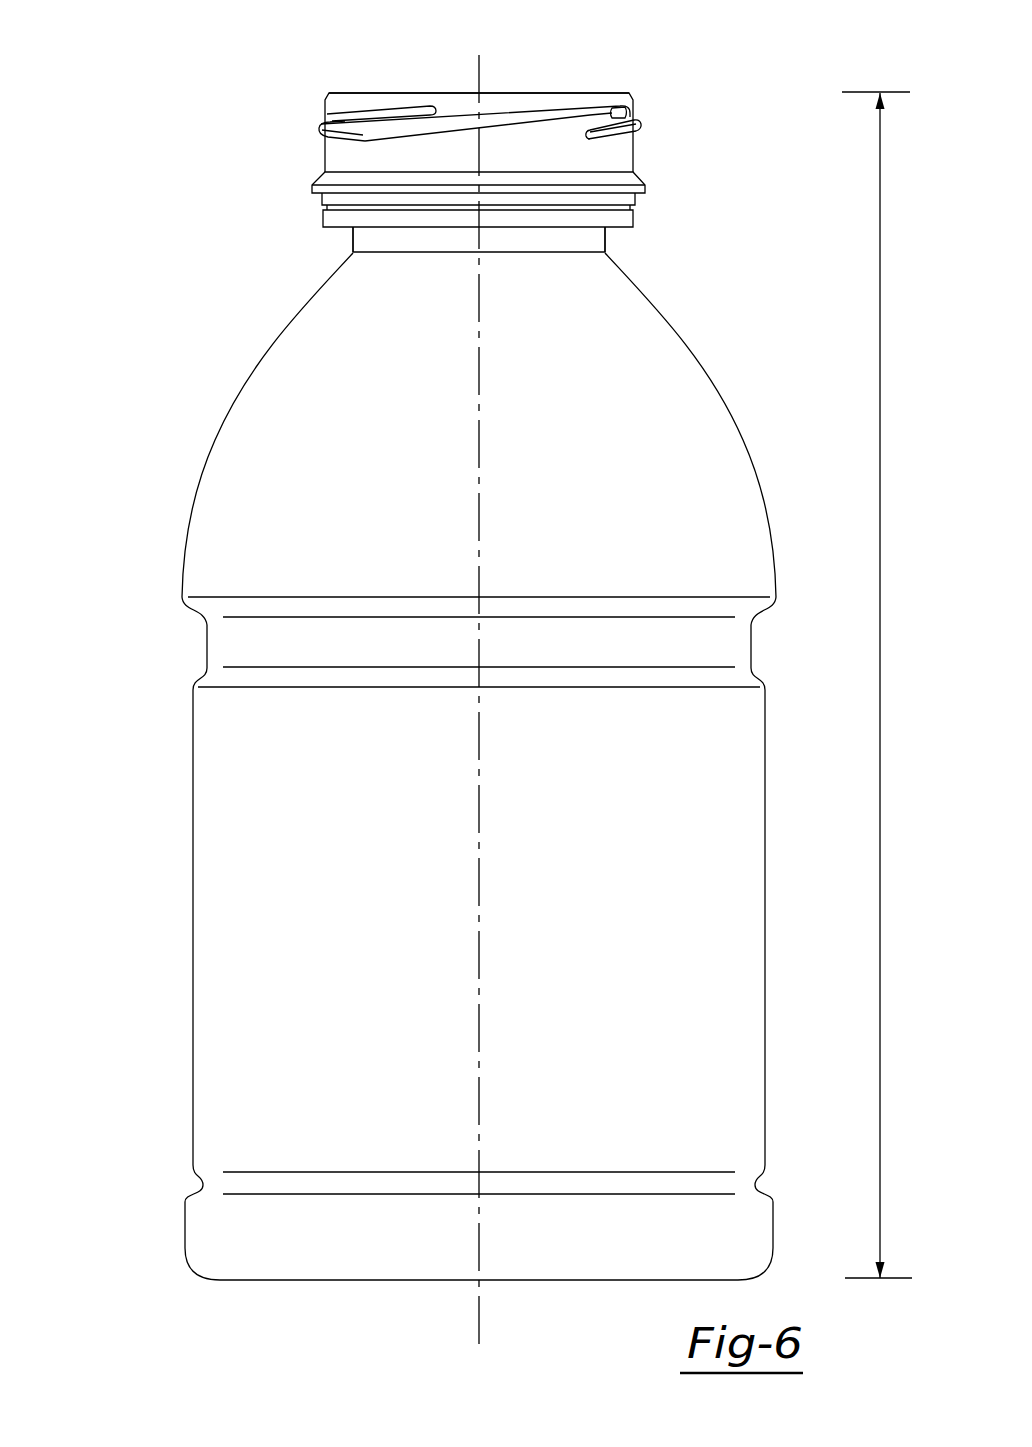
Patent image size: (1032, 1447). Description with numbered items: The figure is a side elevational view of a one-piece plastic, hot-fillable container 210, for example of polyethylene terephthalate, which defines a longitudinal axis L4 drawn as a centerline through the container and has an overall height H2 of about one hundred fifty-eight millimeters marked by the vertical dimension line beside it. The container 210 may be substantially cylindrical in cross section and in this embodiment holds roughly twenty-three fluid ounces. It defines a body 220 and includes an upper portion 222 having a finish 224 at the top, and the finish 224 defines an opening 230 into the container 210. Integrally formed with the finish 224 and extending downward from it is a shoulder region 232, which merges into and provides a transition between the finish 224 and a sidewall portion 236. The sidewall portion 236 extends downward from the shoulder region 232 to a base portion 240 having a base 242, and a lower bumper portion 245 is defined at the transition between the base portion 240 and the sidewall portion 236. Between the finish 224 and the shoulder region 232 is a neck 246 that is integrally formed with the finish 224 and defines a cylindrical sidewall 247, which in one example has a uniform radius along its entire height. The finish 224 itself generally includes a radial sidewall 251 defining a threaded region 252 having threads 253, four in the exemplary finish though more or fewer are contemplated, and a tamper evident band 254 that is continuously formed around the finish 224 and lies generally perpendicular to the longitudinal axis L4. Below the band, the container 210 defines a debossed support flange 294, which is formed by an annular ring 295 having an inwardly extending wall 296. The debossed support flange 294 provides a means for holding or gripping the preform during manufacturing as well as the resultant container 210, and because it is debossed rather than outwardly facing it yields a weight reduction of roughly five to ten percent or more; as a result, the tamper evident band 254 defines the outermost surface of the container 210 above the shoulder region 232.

The container 210 is at (416, 691).
The body 220 is at (420, 927).
The upper portion 222 is at (416, 471).
The finish 224 is at (443, 184).
The opening 230 is at (550, 90).
The shoulder region 232 is at (253, 350).
The sidewall portion 236 is at (148, 805).
The base portion 240 is at (425, 1260).
The base 242 is at (293, 1281).
The lower bumper portion 245 is at (187, 1199).
The neck 246 is at (421, 262).
The cylindrical sidewall 247 is at (438, 243).
The radial sidewall 251 is at (448, 108).
The threaded region 252 is at (642, 100).
The threads 253 is at (643, 127).
The tamper evident band 254 is at (646, 192).
The debossed support flange 294 is at (619, 229).
The annular ring 295 is at (640, 220).
The inwardly extending wall 296 is at (513, 228).
The longitudinal axis L4 is at (485, 368).
The overall height H2 is at (877, 685).